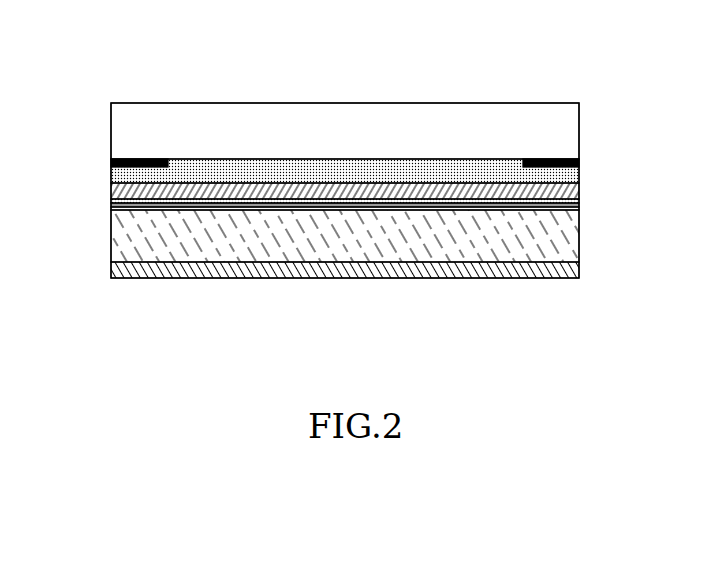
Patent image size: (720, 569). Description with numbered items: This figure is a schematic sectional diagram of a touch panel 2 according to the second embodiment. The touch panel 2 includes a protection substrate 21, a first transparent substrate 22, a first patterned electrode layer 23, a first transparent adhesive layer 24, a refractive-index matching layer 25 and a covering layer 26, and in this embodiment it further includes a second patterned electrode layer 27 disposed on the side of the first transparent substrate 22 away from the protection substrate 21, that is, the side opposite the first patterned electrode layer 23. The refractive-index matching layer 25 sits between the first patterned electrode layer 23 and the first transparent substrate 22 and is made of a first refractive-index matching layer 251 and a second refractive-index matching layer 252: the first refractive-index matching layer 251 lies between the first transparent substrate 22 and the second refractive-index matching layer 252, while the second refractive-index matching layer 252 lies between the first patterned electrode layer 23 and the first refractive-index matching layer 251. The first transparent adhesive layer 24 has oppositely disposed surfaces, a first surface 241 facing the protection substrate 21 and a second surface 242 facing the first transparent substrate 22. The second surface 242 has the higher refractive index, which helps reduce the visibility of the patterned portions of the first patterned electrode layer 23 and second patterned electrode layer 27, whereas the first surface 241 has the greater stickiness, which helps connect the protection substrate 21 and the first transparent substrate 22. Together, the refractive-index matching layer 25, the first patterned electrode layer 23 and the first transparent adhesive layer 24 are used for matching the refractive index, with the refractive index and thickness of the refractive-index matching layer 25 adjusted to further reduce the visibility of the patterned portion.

The touch panel 2 is at (205, 40).
The protection substrate 21 is at (579, 114).
The first transparent substrate 22 is at (579, 245).
The first patterned electrode layer 23 is at (579, 210).
The first transparent adhesive layer 24 is at (394, 176).
The first surface 241 is at (579, 160).
The second surface 242 is at (579, 187).
The refractive-index matching layer 25 is at (303, 204).
The first refractive-index matching layer 251 is at (324, 223).
The second refractive-index matching layer 252 is at (111, 201).
The covering layer 26 is at (143, 159).
The second patterned electrode layer 27 is at (579, 272).